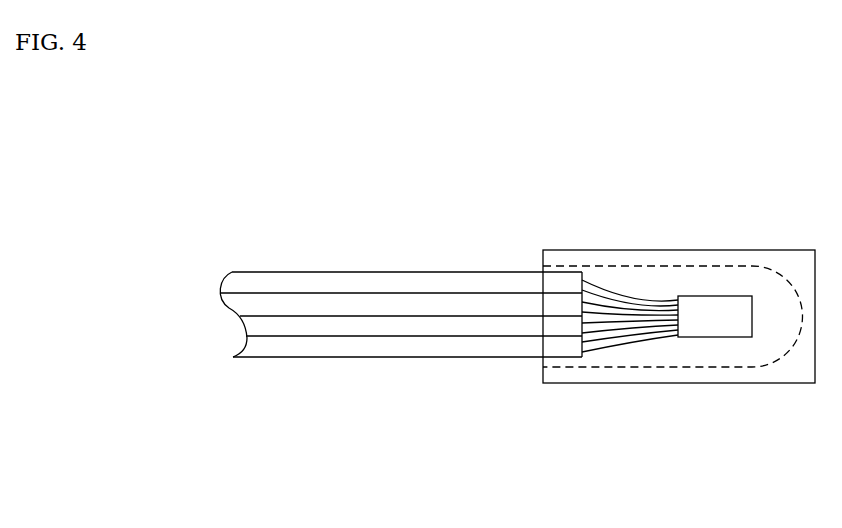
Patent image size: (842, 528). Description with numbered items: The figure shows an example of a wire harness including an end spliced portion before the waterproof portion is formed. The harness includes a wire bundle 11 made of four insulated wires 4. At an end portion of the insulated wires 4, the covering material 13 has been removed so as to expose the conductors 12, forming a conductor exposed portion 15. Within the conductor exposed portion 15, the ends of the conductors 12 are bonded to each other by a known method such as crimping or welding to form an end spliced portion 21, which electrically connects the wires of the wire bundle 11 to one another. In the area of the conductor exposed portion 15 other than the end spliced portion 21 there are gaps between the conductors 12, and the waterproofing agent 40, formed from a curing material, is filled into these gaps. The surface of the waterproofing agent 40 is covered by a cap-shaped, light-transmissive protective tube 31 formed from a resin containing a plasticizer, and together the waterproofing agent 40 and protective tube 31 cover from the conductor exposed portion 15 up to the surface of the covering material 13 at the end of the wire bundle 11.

The insulated wire 4 is at (369, 351).
The wire bundle 11 is at (465, 463).
The conductor 12 is at (604, 278).
The covering material 13 is at (372, 285).
The conductor exposed portion 15 is at (651, 341).
The end spliced portion 21 is at (703, 305).
The protective tube 31 is at (790, 268).
The waterproofing agent 40 is at (648, 288).